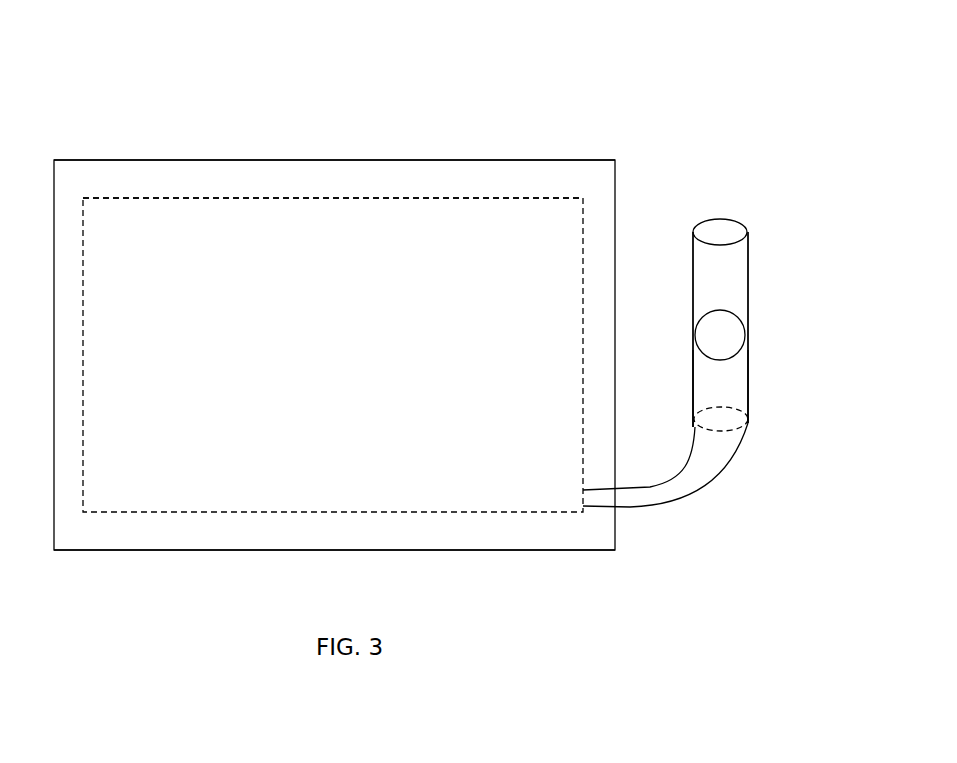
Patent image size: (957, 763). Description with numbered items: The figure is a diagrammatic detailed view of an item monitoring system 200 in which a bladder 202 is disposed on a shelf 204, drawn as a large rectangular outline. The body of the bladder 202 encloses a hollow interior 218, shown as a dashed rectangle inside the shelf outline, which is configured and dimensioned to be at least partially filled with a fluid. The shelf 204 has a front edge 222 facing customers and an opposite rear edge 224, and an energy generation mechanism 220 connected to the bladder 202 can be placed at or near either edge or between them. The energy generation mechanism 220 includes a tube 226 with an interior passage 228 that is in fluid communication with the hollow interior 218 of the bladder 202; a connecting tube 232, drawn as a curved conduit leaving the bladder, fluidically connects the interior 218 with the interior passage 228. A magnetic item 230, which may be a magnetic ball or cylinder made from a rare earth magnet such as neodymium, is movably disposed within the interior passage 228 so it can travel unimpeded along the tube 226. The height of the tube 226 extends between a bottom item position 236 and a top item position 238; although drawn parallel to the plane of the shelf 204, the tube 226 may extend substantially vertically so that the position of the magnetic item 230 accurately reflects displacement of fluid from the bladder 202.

The item monitoring system 200 is at (393, 70).
The bladder 202 is at (207, 198).
The shelf 204 is at (499, 175).
The hollow interior 218 is at (142, 255).
The energy generation mechanism 220 is at (689, 235).
The front edge 222 is at (185, 550).
The rear edge 224 is at (273, 160).
The tube 226 is at (750, 258).
The interior passage 228 is at (732, 380).
The magnetic item 230 is at (742, 332).
The connecting tube 232 is at (662, 498).
The bottom item position 236 is at (720, 430).
The top item position 238 is at (720, 228).